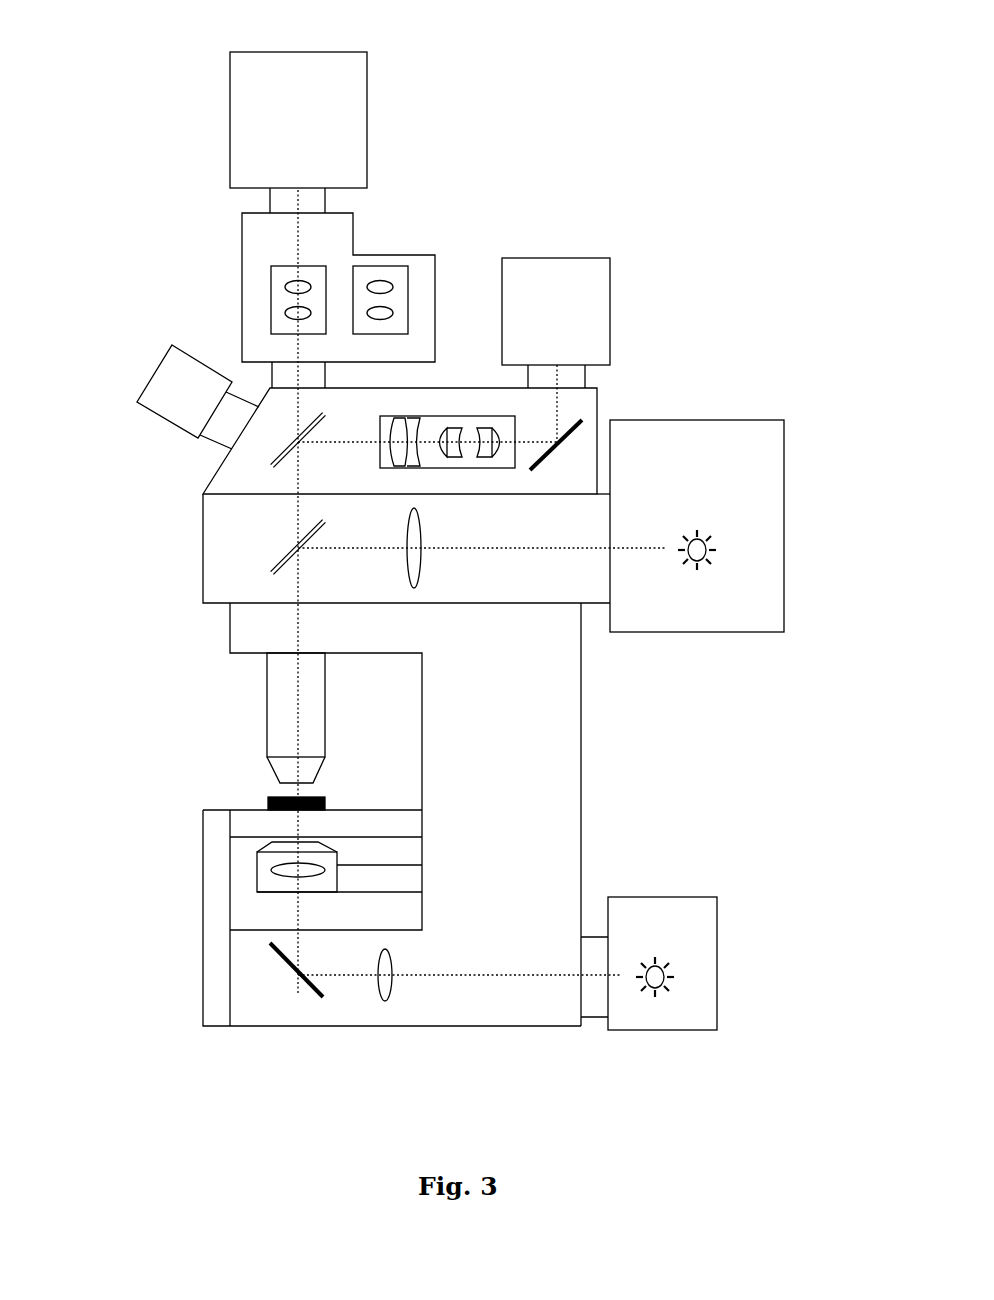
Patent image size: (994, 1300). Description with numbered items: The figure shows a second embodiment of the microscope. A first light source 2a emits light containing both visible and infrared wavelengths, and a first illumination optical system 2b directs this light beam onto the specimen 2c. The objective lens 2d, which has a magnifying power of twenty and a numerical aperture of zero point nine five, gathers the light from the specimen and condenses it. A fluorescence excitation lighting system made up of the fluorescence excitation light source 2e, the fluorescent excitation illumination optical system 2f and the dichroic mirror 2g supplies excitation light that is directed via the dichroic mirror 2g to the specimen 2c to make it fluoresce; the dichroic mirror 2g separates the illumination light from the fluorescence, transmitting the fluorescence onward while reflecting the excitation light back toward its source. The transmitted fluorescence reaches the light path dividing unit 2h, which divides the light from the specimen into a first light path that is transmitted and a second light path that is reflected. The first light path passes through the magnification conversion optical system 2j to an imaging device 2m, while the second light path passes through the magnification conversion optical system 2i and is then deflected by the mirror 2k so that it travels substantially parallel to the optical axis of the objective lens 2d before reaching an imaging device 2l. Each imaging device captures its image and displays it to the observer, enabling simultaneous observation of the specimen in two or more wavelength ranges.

The first light source 2a is at (662, 1005).
The first illumination optical system 2b is at (377, 992).
The specimen 2c is at (268, 800).
The objective lens 2d is at (272, 690).
The fluorescence excitation light source 2e is at (690, 607).
The fluorescent excitation illumination optical system 2f is at (422, 563).
The dichroic mirror 2g is at (297, 547).
The light path dividing unit 2h is at (297, 438).
The magnification conversion optical system 2i is at (465, 425).
The magnification conversion optical system 2j is at (271, 283).
The mirror 2k is at (600, 453).
The imaging device 2l is at (555, 283).
The imaging device 2m is at (270, 78).